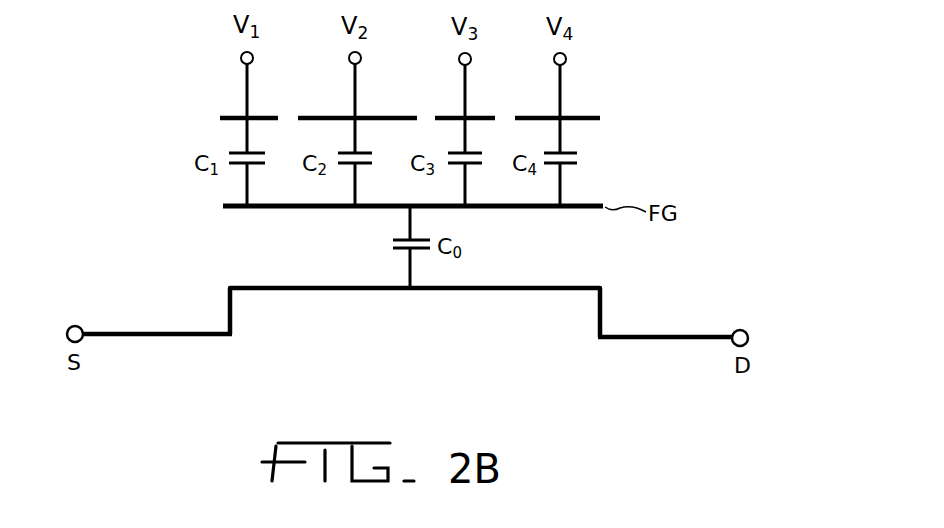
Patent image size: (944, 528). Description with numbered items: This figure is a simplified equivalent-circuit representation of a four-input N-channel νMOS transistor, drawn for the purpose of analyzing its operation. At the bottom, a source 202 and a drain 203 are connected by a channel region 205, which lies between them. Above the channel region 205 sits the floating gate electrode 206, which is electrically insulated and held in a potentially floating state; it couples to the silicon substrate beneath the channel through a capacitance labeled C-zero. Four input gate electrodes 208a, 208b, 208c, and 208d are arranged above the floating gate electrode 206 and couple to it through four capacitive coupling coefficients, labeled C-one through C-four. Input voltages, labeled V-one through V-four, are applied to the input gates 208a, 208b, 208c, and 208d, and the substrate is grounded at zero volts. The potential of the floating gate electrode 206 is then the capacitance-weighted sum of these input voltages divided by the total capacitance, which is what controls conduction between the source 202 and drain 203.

The source 202 is at (158, 336).
The drain 203 is at (665, 341).
The channel region 205 is at (457, 290).
The floating gate electrode 206 is at (592, 205).
The input gate electrode 208a is at (227, 116).
The input gate electrode 208b is at (326, 116).
The input gate electrode 208c is at (437, 116).
The input gate electrode 208d is at (589, 116).